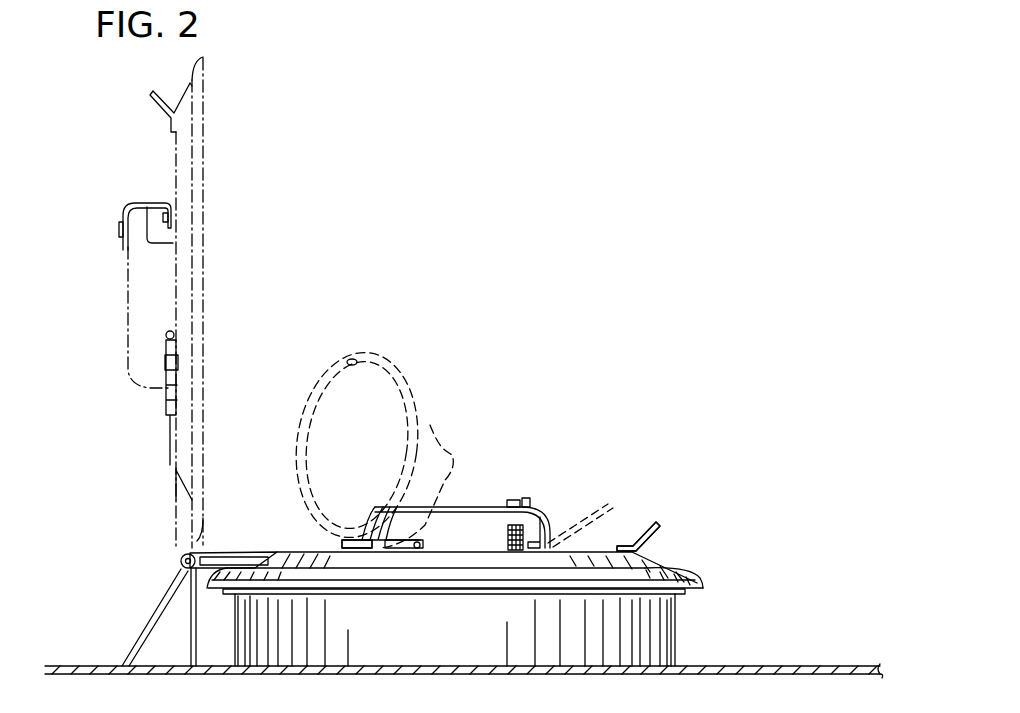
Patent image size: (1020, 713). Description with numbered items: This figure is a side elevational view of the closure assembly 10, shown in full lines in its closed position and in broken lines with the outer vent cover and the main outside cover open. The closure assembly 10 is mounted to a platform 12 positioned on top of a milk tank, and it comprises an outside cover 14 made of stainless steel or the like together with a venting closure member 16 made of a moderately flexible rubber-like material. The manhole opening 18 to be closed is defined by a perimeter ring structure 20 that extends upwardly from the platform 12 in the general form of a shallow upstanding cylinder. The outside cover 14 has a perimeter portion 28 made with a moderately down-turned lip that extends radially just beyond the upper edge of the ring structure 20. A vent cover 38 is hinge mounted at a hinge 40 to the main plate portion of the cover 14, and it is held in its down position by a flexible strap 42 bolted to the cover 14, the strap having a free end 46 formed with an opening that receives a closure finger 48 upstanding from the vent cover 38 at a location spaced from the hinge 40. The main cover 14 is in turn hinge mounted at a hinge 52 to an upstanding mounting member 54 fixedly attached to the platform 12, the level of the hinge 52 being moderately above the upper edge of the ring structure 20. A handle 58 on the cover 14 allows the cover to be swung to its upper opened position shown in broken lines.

The closure assembly 10 is at (640, 476).
The platform 12 is at (808, 672).
The outside cover 14 is at (203, 233).
The venting closure member 16 is at (701, 585).
The manhole opening 18 is at (678, 622).
The perimeter ring structure 20 is at (667, 647).
The perimeter portion 28 is at (687, 572).
The vent cover 38 is at (424, 382).
The hinge 40 is at (345, 542).
The flexible strap 42 is at (570, 505).
The free end 46 is at (512, 500).
The closure finger 48 is at (537, 498).
The hinge 52 is at (179, 562).
The upstanding mounting member 54 is at (140, 627).
The handle 58 is at (657, 533).